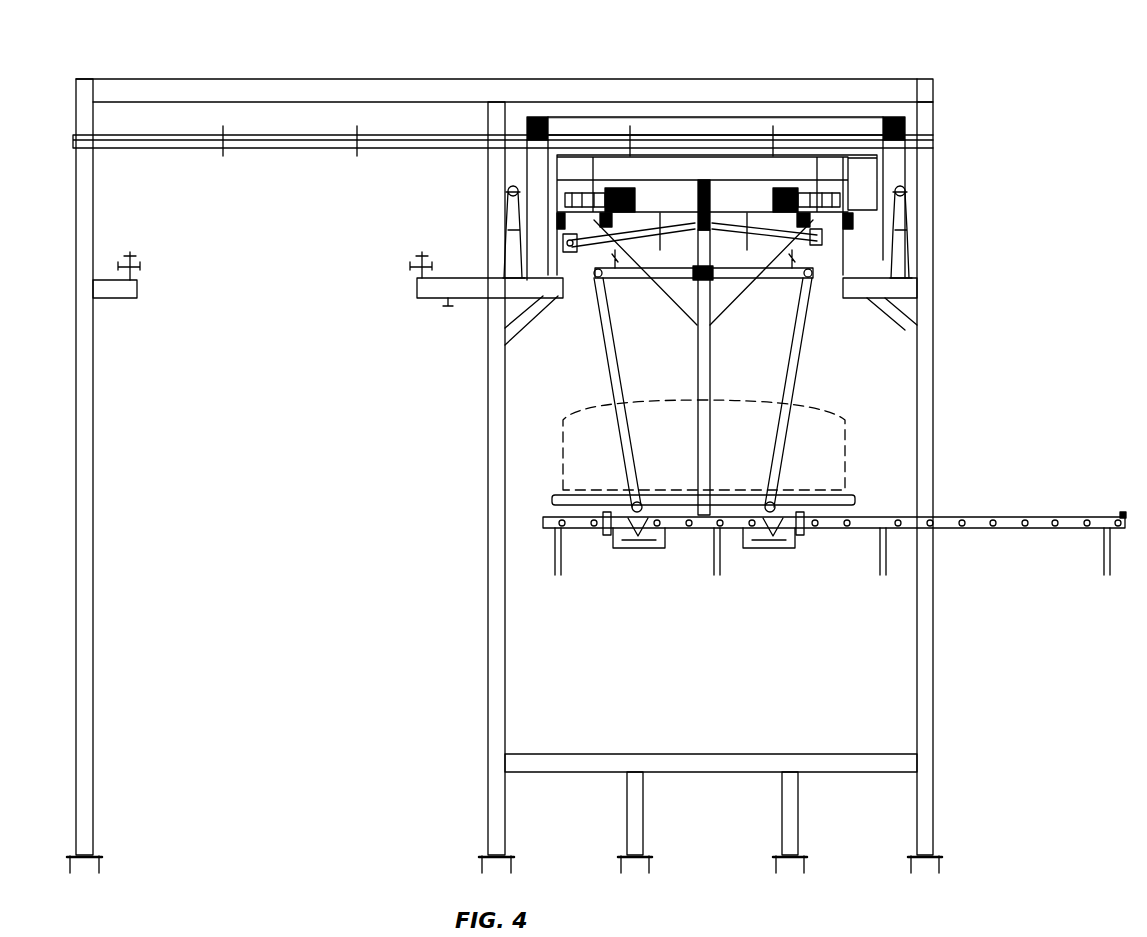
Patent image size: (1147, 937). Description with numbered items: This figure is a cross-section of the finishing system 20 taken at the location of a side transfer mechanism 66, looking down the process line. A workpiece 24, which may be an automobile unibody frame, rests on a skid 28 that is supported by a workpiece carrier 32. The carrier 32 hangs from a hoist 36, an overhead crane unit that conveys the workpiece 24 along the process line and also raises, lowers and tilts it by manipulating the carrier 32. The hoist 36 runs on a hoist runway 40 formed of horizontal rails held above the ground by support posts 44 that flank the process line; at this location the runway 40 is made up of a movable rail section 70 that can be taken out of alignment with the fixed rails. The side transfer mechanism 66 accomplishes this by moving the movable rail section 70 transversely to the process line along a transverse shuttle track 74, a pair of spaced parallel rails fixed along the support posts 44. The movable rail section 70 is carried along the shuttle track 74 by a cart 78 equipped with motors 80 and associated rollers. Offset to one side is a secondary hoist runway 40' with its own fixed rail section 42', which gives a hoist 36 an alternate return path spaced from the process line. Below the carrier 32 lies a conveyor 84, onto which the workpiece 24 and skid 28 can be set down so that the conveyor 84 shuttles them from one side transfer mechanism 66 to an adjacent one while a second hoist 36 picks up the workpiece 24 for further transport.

The finishing system 20 is at (176, 50).
The workpiece 24 is at (845, 418).
The skid 28 is at (853, 497).
The workpiece carrier 32 is at (816, 326).
The hoist 36 is at (740, 192).
The hoist runway 40 is at (657, 272).
The secondary hoist runway 40' is at (159, 253).
The fixed rail section 42' is at (281, 231).
The support posts 44 is at (93, 662).
The side transfer mechanism 66 is at (598, 100).
The movable rail section 70 is at (575, 252).
The transverse shuttle track 74 is at (306, 140).
The cart 78 is at (650, 118).
The motors 80 is at (538, 118).
The conveyor 84 is at (1010, 532).